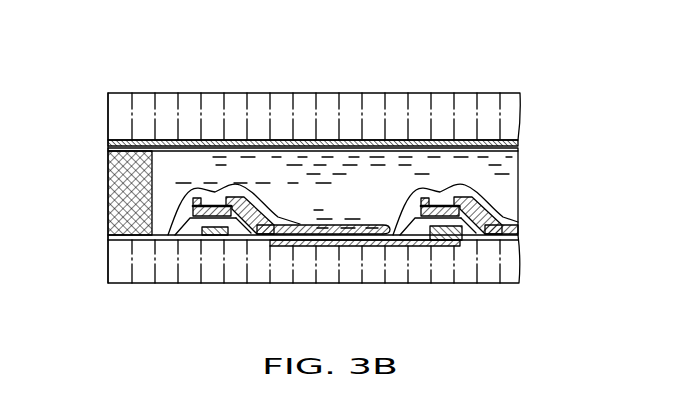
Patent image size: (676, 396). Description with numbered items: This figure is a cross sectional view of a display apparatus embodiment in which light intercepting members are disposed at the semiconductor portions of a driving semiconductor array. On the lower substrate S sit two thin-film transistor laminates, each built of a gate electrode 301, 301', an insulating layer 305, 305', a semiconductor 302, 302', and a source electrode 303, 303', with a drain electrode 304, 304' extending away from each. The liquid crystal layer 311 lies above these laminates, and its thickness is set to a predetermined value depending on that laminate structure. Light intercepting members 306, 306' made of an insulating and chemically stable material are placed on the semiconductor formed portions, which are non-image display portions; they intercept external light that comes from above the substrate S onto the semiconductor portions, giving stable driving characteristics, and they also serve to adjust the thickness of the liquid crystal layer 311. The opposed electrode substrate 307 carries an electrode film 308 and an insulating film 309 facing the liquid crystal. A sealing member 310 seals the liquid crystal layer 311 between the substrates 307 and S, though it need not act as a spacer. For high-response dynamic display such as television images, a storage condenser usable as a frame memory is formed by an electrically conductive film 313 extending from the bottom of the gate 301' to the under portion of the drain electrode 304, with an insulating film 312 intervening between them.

The gate electrode 301 is at (194, 272).
The gate electrode 301' is at (471, 272).
The semiconductor 302 is at (234, 197).
The semiconductor 302' is at (455, 199).
The source electrode 303 is at (196, 187).
The source electrode 303' is at (408, 192).
The drain electrode 304 is at (323, 213).
The drain electrode 304' is at (537, 235).
The insulating layer 305 is at (256, 268).
The insulating layer 305' is at (432, 271).
The light intercepting member 306 is at (275, 210).
The light intercepting member 306' is at (512, 213).
The opposed electrode substrate 307 is at (487, 100).
The electrode film 308 is at (519, 140).
The insulating film 309 is at (518, 149).
The sealing member 310 is at (108, 182).
The liquid crystal layer 311 is at (512, 174).
The insulating film 312 is at (519, 237).
The conductive film 313 is at (350, 246).
The substrate S is at (519, 271).